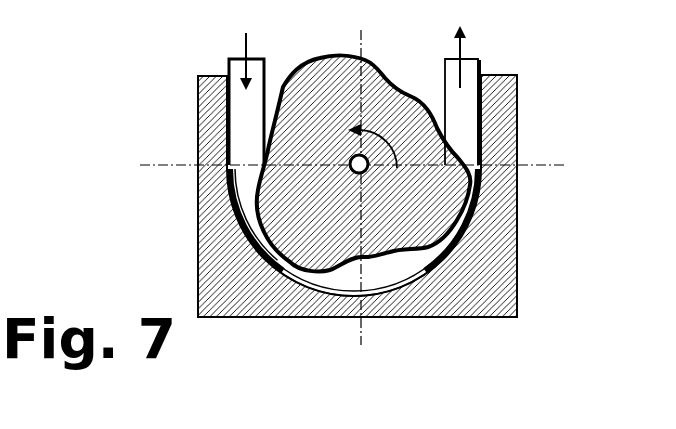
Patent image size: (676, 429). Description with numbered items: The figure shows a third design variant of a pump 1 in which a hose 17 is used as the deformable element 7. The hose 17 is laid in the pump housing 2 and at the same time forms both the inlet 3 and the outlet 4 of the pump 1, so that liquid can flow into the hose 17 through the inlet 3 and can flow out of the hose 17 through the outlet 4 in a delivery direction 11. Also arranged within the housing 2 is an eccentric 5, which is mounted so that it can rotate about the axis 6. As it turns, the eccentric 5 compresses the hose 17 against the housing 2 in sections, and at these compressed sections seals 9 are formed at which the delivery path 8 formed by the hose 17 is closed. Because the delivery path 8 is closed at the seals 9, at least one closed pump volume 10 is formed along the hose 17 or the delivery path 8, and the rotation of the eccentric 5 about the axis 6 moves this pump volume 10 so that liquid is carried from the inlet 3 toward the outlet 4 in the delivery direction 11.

The pump 1 is at (132, 88).
The pump housing 2 is at (518, 190).
The inlet 3 is at (235, 57).
The outlet 4 is at (481, 57).
The eccentric 5 is at (410, 92).
The axis 6 is at (463, 222).
The deformable element 7 is at (447, 124).
The delivery path 8 is at (240, 133).
The seals 9 is at (363, 170).
The closed pump volume 10 is at (238, 177).
The delivery direction 11 is at (248, 46).
The hose 17 is at (447, 142).